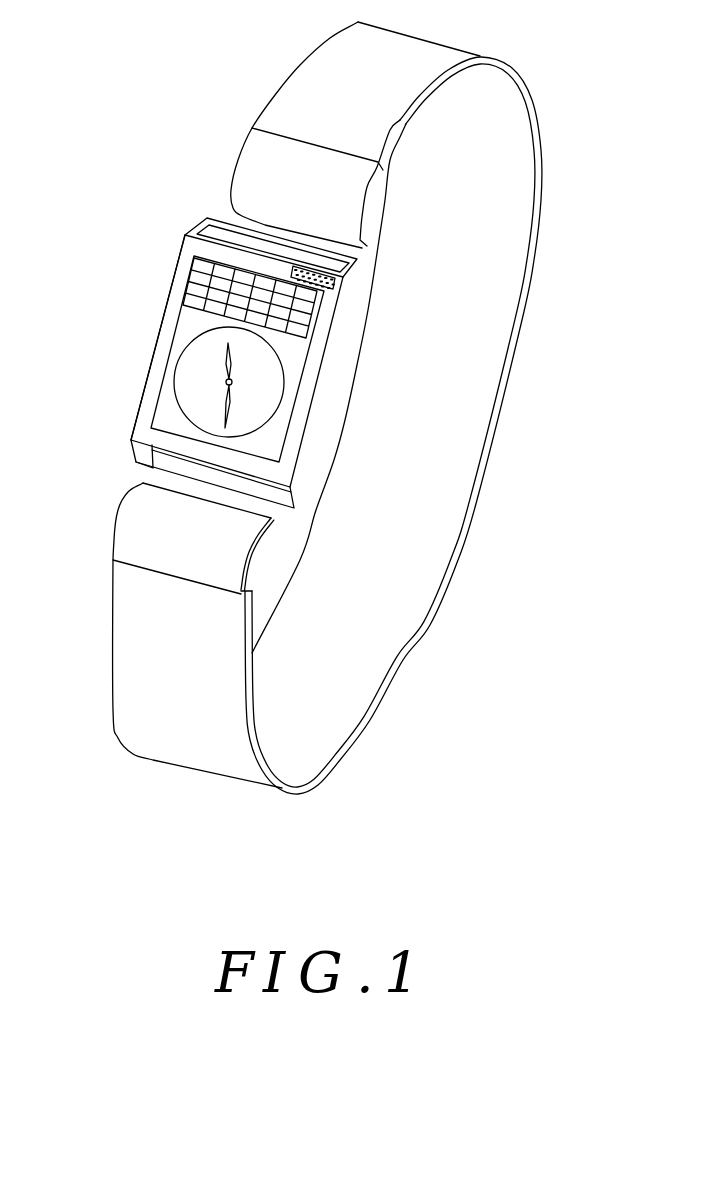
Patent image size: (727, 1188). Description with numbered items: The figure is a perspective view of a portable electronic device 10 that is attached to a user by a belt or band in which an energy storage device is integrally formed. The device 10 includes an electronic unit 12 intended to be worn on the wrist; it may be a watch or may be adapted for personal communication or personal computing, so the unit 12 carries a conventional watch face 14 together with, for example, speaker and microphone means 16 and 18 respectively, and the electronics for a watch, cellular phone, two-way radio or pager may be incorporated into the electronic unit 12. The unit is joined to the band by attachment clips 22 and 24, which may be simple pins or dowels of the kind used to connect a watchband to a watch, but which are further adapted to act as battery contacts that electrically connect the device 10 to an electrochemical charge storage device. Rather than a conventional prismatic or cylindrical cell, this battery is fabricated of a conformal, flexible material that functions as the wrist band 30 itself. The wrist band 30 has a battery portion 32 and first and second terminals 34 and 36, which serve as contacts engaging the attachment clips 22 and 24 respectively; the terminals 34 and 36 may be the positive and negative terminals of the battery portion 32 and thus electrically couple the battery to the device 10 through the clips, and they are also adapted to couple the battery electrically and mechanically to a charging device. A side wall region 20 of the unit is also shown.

The device 10 is at (507, 745).
The electronic unit 12 is at (160, 323).
The watch face 14 is at (187, 387).
The speaker means 16 is at (197, 280).
The microphone means 18 is at (297, 267).
The case side wall 20 is at (138, 423).
The attachment clip 22 is at (230, 223).
The attachment clip 24 is at (152, 466).
The wrist band 30 is at (525, 300).
The battery portion 32 is at (507, 262).
The first terminal 34 is at (255, 152).
The second terminal 36 is at (133, 538).